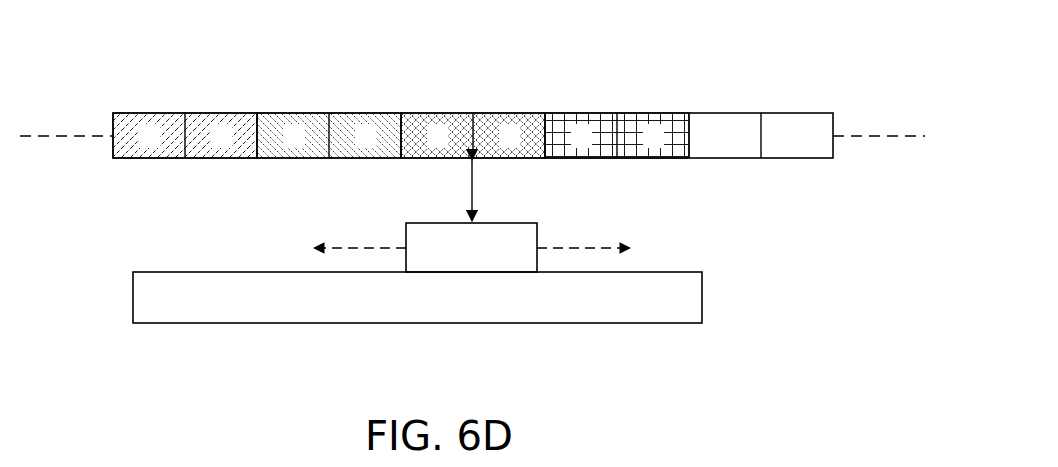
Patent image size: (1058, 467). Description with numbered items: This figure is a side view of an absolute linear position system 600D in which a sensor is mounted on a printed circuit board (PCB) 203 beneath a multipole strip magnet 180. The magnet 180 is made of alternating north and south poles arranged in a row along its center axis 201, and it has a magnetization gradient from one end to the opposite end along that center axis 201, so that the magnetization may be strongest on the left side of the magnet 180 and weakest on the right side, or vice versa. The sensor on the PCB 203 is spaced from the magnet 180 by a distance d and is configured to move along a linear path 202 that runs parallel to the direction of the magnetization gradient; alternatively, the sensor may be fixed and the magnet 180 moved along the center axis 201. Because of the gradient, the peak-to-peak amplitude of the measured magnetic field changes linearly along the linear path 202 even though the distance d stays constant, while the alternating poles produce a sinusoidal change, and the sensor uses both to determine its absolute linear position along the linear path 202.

The absolute linear position system 600D is at (143, 42).
The multipole strip magnet 180 is at (766, 113).
The center axis 201 is at (885, 136).
The linear path 202 is at (575, 248).
The printed circuit board (PCB) 203 is at (702, 297).